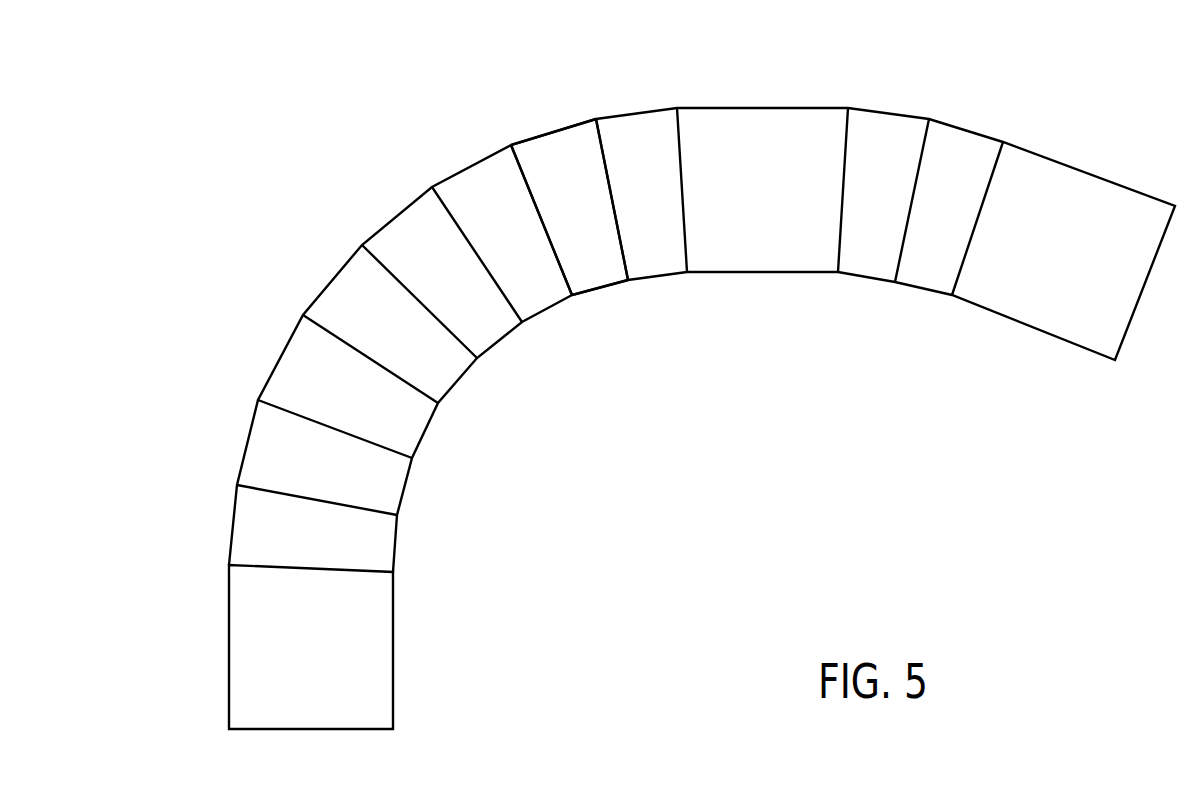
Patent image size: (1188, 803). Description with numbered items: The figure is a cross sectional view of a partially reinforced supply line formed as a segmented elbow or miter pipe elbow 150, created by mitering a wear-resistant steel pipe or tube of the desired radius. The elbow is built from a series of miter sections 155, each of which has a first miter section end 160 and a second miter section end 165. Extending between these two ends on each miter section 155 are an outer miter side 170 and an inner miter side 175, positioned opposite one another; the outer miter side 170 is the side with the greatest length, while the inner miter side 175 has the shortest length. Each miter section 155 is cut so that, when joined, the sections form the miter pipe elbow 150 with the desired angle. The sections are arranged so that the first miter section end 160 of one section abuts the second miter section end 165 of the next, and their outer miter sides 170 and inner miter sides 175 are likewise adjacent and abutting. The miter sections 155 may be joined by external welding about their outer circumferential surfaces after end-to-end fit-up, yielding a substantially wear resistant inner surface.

The miter pipe elbow 150 is at (251, 70).
The miter section 155 is at (524, 129).
The first miter section end 160 is at (515, 175).
The second miter section end 165 is at (600, 147).
The outer miter side 170 is at (553, 130).
The inner miter side 175 is at (603, 290).